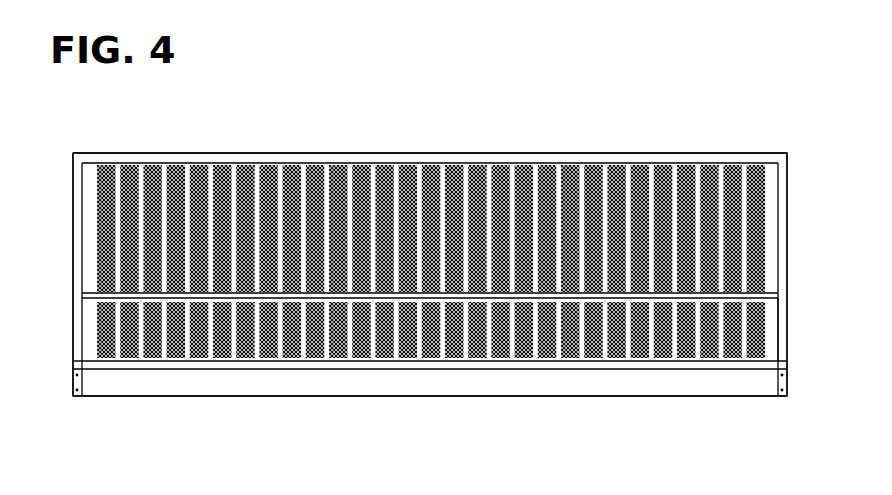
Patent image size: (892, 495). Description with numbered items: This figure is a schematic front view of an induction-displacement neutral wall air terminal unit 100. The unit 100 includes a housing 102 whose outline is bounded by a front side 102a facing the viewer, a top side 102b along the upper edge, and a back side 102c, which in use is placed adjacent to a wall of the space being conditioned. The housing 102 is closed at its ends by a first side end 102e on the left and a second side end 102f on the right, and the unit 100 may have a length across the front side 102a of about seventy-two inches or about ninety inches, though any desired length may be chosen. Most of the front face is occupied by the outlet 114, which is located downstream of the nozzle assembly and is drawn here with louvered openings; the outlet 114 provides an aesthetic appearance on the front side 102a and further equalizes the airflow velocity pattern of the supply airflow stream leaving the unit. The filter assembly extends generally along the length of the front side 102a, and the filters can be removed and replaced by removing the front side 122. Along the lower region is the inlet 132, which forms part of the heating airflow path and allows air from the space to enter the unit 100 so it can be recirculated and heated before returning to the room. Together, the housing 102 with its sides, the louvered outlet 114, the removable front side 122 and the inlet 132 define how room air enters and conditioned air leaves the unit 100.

The air terminal unit 100 is at (388, 94).
The housing 102 is at (600, 152).
The front side 102a is at (560, 372).
The top side 102b is at (357, 152).
The back side 102c is at (424, 394).
The first side end 102e is at (72, 225).
The second side end 102f is at (790, 215).
The outlet 114 is at (774, 333).
The front side 122 is at (768, 199).
The inlet 132 is at (265, 387).